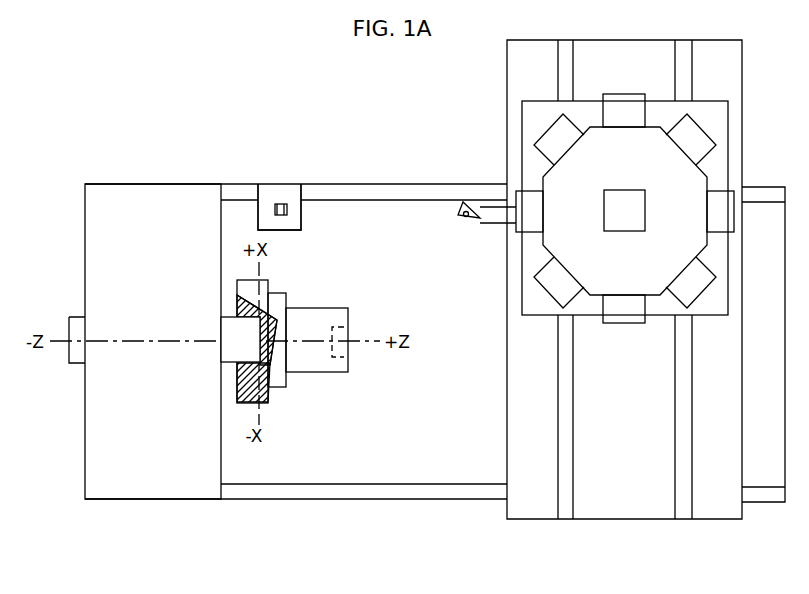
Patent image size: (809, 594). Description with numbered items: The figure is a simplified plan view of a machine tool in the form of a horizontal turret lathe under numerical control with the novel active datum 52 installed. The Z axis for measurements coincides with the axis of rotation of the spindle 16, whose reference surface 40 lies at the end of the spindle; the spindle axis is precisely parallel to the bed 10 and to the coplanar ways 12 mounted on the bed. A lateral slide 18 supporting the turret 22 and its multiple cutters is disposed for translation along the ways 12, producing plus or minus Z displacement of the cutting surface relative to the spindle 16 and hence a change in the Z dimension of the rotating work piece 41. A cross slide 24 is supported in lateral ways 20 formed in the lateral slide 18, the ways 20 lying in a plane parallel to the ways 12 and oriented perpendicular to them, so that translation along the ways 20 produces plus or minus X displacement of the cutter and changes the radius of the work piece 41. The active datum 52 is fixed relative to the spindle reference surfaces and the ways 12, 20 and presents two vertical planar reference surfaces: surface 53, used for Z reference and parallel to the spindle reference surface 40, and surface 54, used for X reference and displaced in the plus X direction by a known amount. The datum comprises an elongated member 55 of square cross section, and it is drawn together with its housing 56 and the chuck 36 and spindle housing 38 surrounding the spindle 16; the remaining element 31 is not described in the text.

The bed 10 is at (754, 362).
The ways 12 is at (354, 183).
The spindle 16 is at (228, 316).
The lateral slide 18 is at (626, 519).
The lateral ways 20 is at (573, 433).
The turret 22 is at (615, 165).
The cross slide 24 is at (507, 128).
The turret spindle 31 is at (615, 225).
The chuck 36 is at (237, 284).
The spindle housing 38 is at (285, 385).
The reference surface 40 is at (221, 353).
The work piece 41 is at (335, 375).
The active datum 52 is at (213, 141).
The planar reference surface 53 is at (288, 210).
The second planar reference surface 54 is at (277, 204).
The elongated member 55 is at (284, 216).
The probe housing 56 is at (290, 190).